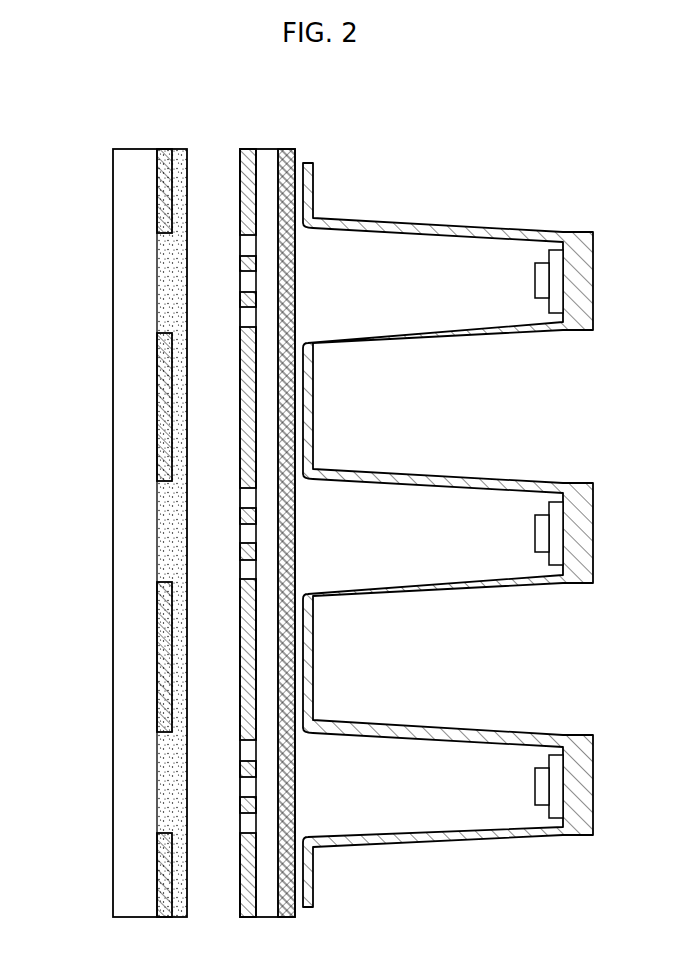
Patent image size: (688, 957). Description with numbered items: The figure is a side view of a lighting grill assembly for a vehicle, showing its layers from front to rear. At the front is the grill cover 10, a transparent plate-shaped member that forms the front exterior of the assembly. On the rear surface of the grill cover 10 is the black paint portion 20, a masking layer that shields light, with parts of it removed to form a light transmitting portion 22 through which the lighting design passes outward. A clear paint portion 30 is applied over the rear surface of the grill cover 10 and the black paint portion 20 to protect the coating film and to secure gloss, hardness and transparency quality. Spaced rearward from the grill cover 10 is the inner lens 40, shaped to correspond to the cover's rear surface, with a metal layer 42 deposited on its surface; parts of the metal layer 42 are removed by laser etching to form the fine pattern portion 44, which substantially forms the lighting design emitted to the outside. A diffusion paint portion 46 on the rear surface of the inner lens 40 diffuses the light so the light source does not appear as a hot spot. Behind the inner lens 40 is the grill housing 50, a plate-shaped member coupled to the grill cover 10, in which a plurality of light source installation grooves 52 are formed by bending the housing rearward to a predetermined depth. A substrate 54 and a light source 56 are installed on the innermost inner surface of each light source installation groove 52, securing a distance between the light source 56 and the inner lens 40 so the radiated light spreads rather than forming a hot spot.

The grill cover 10 is at (128, 192).
The black paint portion 20 is at (165, 368).
The light transmitting portion 22 is at (158, 302).
The clear paint portion 30 is at (173, 520).
The inner lens 40 is at (268, 605).
The metal layer 42 is at (247, 682).
The fine pattern portion 44 is at (246, 753).
The diffusion paint portion 46 is at (287, 855).
The grill housing 50 is at (310, 645).
The light source installation groove 52 is at (405, 225).
The substrate 54 is at (558, 255).
The light source 56 is at (541, 262).